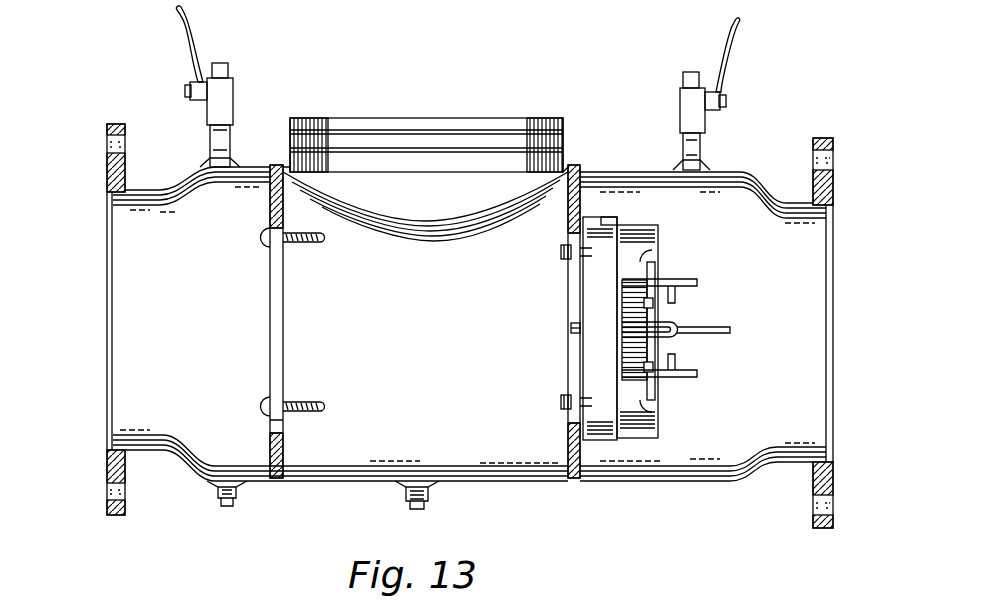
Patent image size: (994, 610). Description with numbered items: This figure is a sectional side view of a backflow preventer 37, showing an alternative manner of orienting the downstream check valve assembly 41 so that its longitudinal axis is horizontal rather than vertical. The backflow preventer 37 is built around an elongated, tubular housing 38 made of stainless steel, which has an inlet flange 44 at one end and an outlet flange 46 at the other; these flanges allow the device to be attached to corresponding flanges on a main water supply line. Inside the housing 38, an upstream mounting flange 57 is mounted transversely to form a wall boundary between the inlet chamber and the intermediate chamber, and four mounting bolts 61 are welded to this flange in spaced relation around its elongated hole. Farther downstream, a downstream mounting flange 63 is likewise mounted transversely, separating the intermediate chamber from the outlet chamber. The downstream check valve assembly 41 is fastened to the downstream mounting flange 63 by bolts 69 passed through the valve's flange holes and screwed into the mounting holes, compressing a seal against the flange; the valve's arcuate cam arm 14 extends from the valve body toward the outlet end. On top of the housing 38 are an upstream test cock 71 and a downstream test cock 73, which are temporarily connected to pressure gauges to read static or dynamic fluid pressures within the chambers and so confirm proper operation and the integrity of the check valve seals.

The cam arm 14 is at (722, 330).
The backflow preventer 37 is at (758, 129).
The housing 38 is at (603, 172).
The downstream check valve assembly 41 is at (688, 404).
The inlet flange 44 is at (107, 172).
The outlet flange 46 is at (834, 478).
The upstream mounting flange 57 is at (268, 203).
The mounting bolts 61 is at (314, 243).
The downstream mounting flange 63 is at (568, 462).
The bolts 69 is at (562, 254).
The upstream test cock 71 is at (233, 90).
The downstream test cock 73 is at (680, 98).